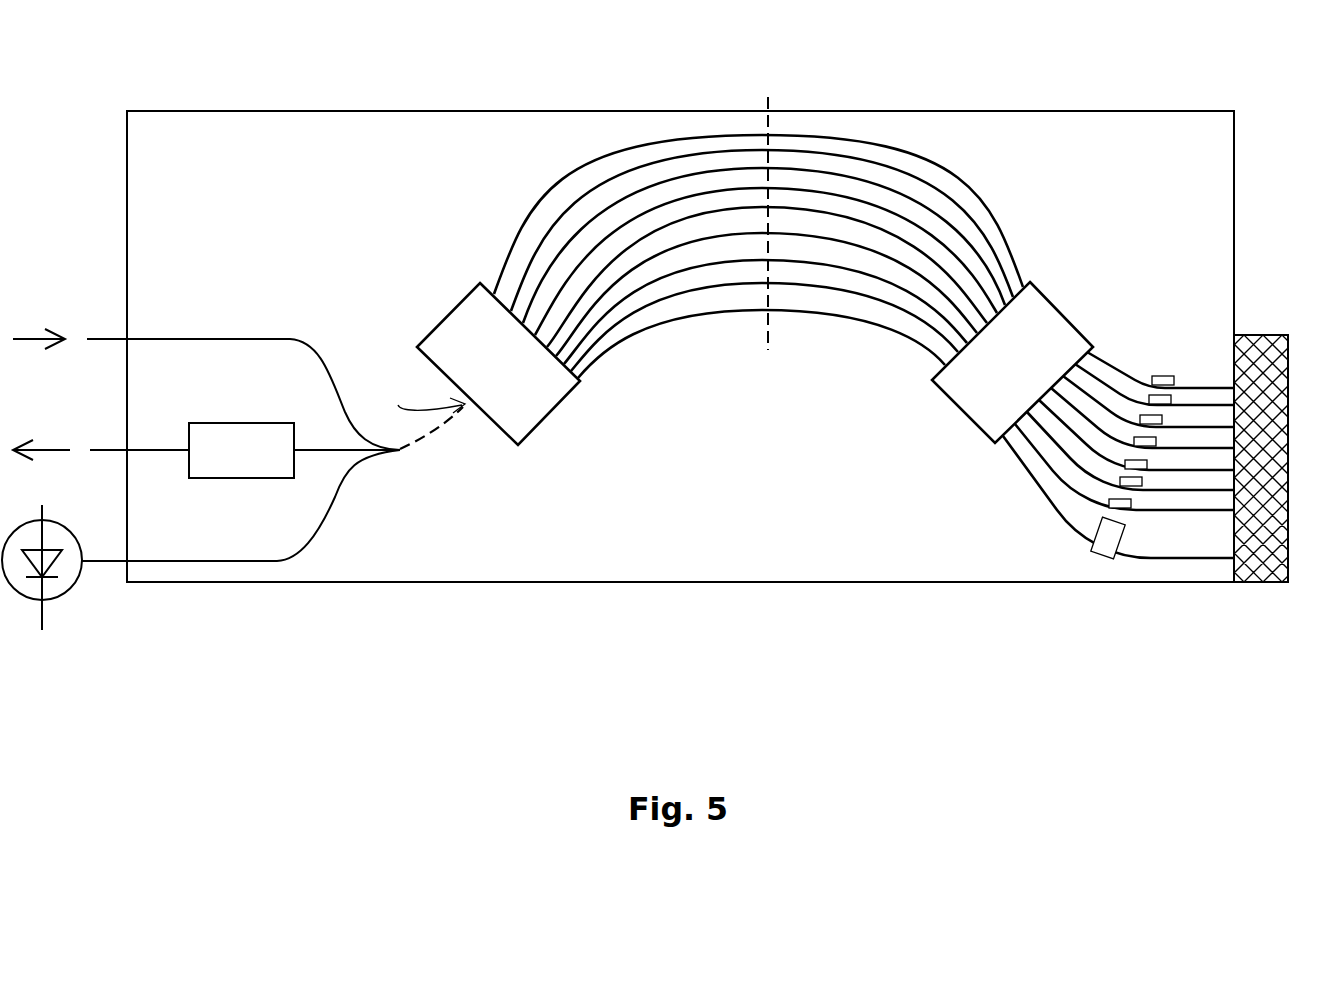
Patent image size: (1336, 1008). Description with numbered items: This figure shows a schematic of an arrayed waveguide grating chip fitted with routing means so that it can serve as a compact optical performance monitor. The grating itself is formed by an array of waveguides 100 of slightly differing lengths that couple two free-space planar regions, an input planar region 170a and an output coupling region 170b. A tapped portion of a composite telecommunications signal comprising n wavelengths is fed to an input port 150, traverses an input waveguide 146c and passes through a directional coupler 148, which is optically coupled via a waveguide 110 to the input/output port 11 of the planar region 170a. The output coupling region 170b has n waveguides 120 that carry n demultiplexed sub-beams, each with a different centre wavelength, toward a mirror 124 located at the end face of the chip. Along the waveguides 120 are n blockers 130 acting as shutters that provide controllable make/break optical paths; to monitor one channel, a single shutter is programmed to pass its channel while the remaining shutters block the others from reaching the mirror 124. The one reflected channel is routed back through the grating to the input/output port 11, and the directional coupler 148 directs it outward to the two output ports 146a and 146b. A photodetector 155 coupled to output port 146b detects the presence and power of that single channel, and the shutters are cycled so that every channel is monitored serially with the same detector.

The waveguides 100 is at (940, 178).
The input waveguide 110 is at (413, 450).
The input/output port 11 is at (424, 390).
The waveguides 120 is at (1183, 386).
The mirror 124 is at (1277, 590).
The blockers 130 is at (1153, 377).
The output port 146a is at (127, 450).
The output port 146b is at (123, 567).
The input waveguide 146c is at (183, 338).
The directional coupler 148 is at (396, 455).
The input port 150 is at (39, 322).
The photodetector 155 is at (18, 602).
The planar region 170a is at (550, 410).
The output coupling region 170b is at (957, 405).